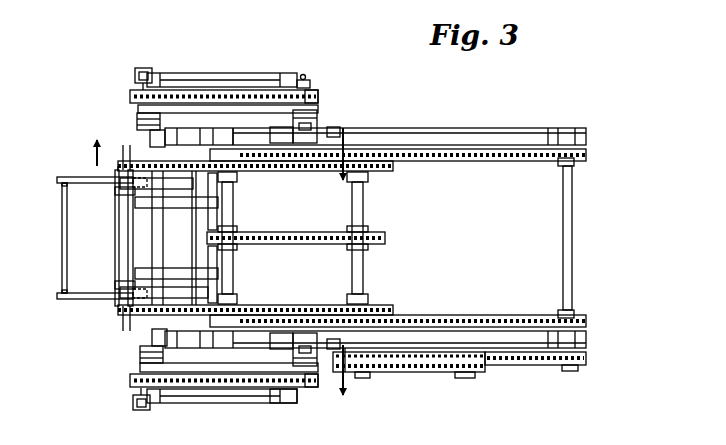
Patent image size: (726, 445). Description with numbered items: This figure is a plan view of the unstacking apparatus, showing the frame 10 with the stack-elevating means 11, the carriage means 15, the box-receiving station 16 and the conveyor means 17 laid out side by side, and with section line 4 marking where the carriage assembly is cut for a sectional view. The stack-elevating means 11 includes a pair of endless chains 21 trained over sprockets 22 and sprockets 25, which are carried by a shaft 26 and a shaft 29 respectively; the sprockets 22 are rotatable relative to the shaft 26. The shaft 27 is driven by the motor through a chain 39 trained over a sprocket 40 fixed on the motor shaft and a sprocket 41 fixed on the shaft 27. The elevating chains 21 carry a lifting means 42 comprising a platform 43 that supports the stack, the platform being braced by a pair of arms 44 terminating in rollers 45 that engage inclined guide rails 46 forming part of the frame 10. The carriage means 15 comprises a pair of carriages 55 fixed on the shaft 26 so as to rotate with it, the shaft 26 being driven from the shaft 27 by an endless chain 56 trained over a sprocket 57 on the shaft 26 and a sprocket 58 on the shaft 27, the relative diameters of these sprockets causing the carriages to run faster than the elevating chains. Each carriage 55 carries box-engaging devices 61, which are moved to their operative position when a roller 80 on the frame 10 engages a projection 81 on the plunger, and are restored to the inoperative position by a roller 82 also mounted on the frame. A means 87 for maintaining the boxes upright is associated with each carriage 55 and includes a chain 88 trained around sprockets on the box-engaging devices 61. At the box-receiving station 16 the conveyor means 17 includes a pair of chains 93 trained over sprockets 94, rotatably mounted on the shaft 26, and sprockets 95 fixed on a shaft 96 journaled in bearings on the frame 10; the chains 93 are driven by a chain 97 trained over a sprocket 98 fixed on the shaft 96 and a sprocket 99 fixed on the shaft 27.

The section line 4- 4 is at (218, 271).
The frame 10 is at (449, 127).
The stack-elevating means 11 is at (123, 318).
The carriage means 15 is at (251, 72).
The box-receiving station 16 is at (401, 127).
The conveyor means 17 is at (491, 158).
The endless chains 21 is at (122, 148).
The sprockets 22 is at (237, 177).
The sprockets 25 is at (150, 152).
The shaft 26 is at (234, 223).
The shaft 27 is at (363, 208).
The shaft 29 is at (150, 244).
The chain 39 is at (415, 373).
The sprocket 40 is at (460, 379).
The sprocket 41 is at (355, 380).
The lifting means 42 is at (68, 312).
The platform 43 is at (75, 177).
The arms 44 is at (62, 190).
The rollers 45 is at (115, 191).
The guide rails 46 is at (130, 196).
The carriages 55 is at (209, 110).
The endless chain 56 is at (290, 232).
The sprocket 57 is at (237, 249).
The sprocket 58 is at (349, 248).
The box-engaging devices 61 is at (159, 114).
The roller 80 is at (143, 67).
The projection 81 is at (155, 76).
The roller 82 is at (293, 135).
The means for maintaining the boxes upright 87 is at (283, 81).
The chain 88 is at (320, 94).
The chains 93 is at (498, 162).
The sprockets 94 is at (264, 162).
The sprockets 95 is at (574, 164).
The shaft 96 is at (573, 240).
The chain 97 is at (512, 366).
The sprocket 98 is at (568, 372).
The sprocket 99 is at (366, 379).